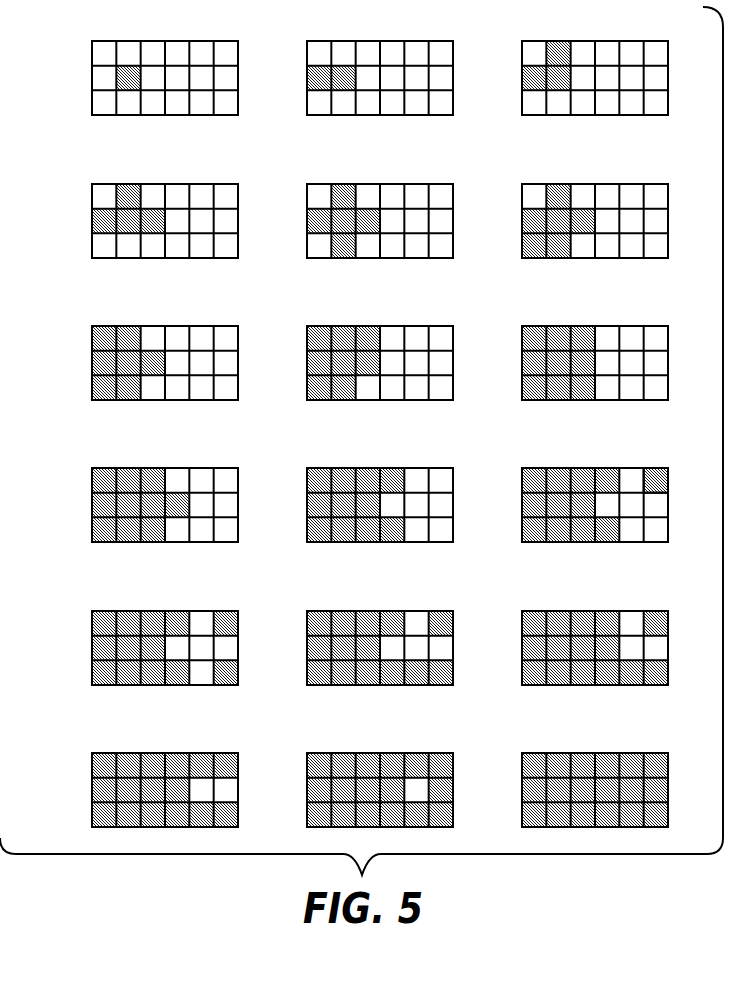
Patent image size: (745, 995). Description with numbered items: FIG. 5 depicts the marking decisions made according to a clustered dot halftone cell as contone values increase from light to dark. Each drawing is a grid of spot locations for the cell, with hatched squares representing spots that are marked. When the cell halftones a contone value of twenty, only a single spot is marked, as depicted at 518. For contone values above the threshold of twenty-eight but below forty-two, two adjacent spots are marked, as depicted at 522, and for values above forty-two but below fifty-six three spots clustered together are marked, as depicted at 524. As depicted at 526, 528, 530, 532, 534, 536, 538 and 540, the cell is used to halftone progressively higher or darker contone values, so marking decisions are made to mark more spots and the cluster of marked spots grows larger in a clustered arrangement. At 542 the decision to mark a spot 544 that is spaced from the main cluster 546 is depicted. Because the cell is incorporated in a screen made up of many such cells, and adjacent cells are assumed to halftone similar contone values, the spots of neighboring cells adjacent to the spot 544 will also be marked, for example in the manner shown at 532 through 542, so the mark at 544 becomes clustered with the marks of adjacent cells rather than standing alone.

The single marked spot depiction 518 is at (152, 41).
The two adjacent marked spots depiction 522 is at (366, 41).
The three clustered marked spots depiction 524 is at (581, 41).
The growing cluster depiction 526 is at (92, 220).
The growing cluster depiction 528 is at (366, 184).
The growing cluster depiction 530 is at (581, 184).
The growing cluster depiction 532 is at (92, 362).
The growing cluster depiction 534 is at (366, 326).
The growing cluster depiction 536 is at (581, 326).
The growing cluster depiction 538 is at (92, 505).
The growing cluster depiction 540 is at (380, 468).
The spaced spot marking decision depiction 542 is at (585, 504).
The spaced spot 544 is at (629, 459).
The main cluster 546 is at (566, 537).